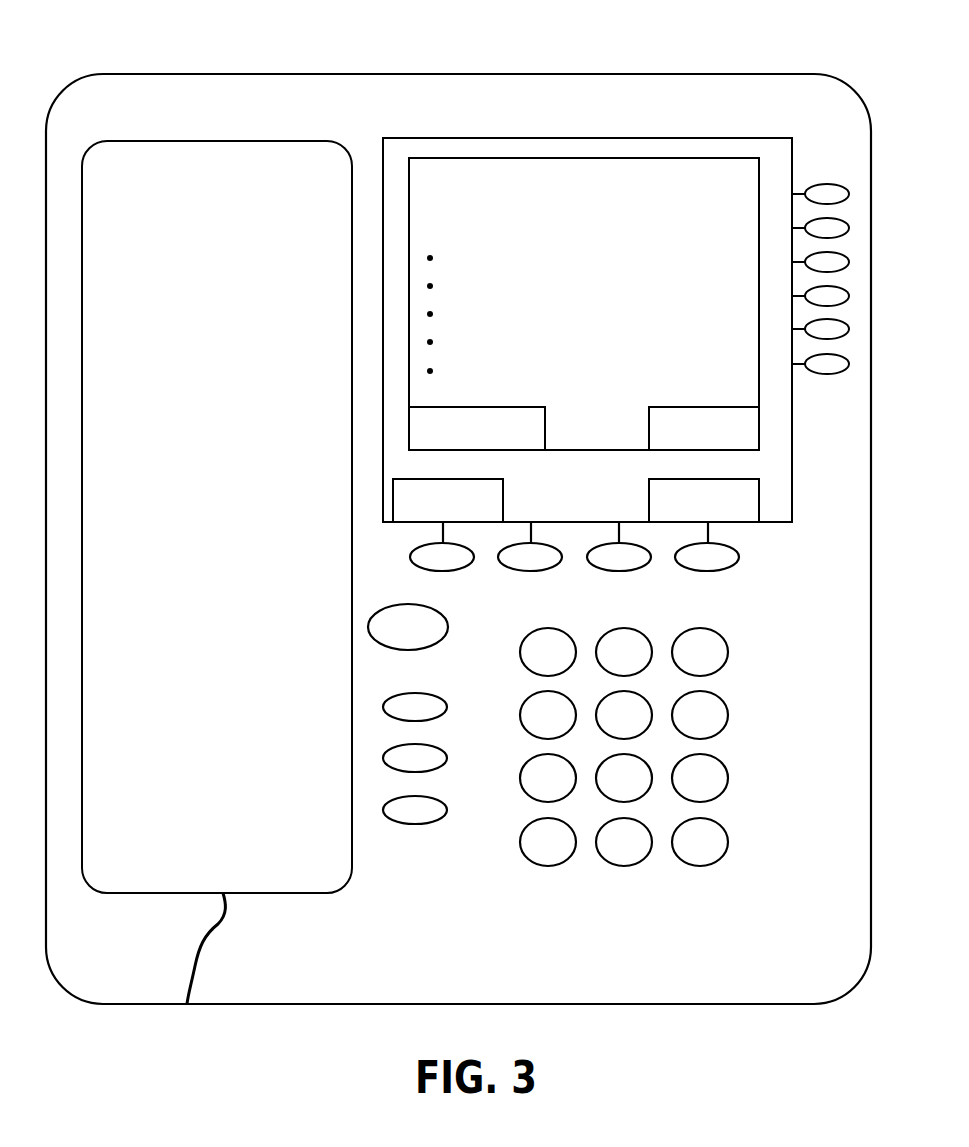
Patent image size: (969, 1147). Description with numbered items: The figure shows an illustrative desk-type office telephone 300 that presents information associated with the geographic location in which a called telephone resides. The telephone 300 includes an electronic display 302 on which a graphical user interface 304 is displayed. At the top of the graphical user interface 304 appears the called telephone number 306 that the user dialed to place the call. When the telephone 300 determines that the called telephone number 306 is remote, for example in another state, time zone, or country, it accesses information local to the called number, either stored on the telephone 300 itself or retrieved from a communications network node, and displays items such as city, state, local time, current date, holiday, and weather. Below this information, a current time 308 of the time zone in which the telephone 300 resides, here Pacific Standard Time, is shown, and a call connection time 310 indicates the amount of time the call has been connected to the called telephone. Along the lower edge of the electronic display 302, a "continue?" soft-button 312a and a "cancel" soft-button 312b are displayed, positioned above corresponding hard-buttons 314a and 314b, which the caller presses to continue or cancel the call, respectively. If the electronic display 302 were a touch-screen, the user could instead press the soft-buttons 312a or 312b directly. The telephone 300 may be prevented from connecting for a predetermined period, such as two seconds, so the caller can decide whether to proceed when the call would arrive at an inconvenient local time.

The telephone 300 is at (615, 74).
The electronic display 302 is at (623, 138).
The graphical user interface 304 is at (634, 214).
The called telephone number 306 is at (586, 181).
The current time 308 is at (548, 429).
The call connection time 310 is at (707, 404).
The "continue?" soft-button 312a is at (503, 500).
The "cancel" soft-button 312b is at (649, 490).
The hard-button 314a is at (450, 572).
The hard-button 314b is at (707, 572).